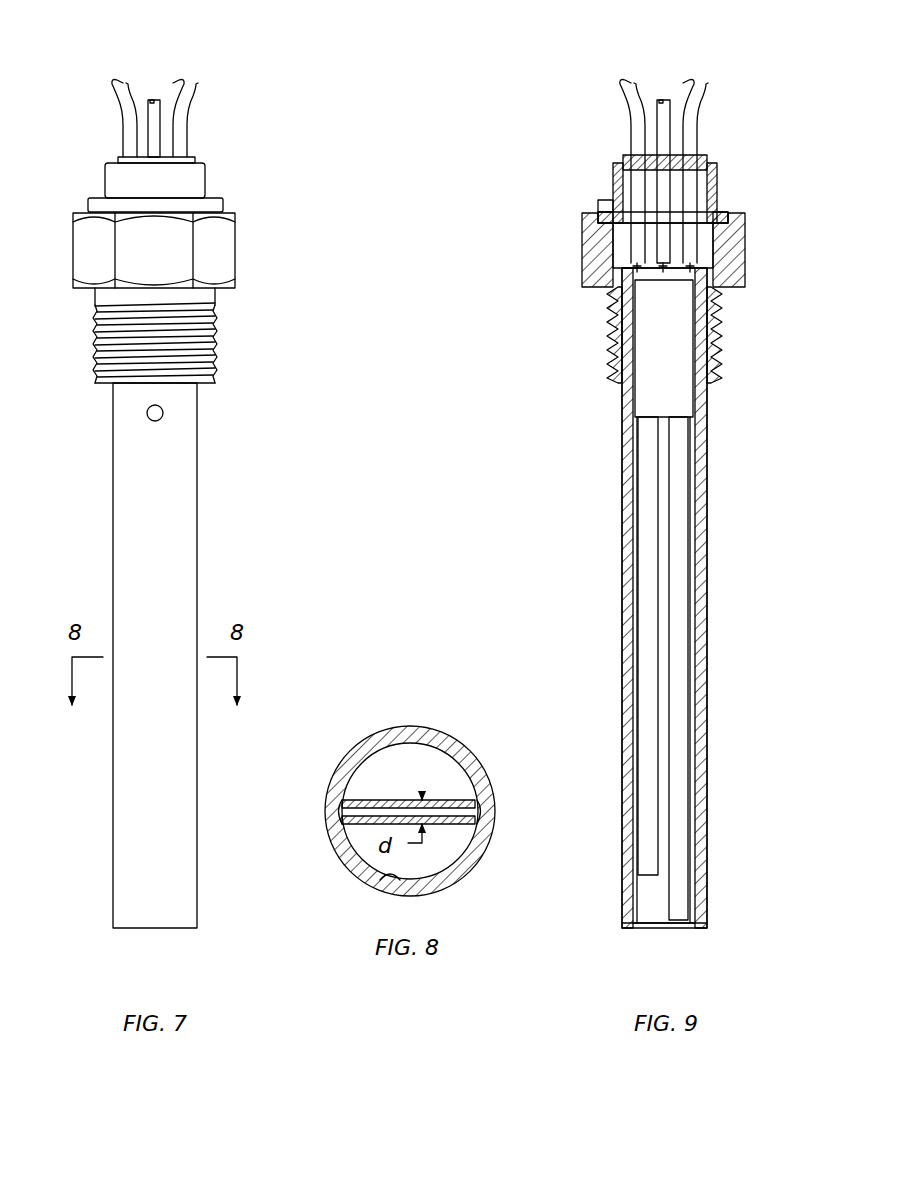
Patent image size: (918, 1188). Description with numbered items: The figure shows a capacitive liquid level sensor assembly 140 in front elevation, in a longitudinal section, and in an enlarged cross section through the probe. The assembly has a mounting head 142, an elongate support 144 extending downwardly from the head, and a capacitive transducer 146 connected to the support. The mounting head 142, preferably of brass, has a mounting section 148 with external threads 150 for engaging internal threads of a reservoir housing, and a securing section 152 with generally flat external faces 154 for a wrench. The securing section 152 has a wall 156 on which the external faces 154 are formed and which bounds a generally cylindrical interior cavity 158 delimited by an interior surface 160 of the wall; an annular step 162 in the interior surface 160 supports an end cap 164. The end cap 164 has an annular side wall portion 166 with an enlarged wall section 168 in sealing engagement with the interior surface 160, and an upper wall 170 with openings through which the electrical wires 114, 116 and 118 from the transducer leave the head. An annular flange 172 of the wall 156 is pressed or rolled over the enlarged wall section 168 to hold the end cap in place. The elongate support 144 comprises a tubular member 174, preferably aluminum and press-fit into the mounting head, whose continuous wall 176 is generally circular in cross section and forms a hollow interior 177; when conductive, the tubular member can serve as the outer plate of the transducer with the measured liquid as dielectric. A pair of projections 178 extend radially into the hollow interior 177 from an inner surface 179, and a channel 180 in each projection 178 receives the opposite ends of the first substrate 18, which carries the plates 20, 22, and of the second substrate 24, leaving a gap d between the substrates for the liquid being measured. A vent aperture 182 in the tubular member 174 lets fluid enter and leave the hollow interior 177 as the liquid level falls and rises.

In FIG. 8, the first substrate 18 is at (470, 775).
In FIG. 9, the first substrate 18 is at (640, 905).
In FIG. 9, the plate 20 is at (650, 762).
In FIG. 9, the plate 22 is at (680, 660).
In FIG. 8, the second substrate 24 is at (418, 890).
In FIG. 7, the electrical wire 114 is at (120, 82).
In FIG. 9, the electrical wire 114 is at (630, 82).
In FIG. 7, the electrical wire 116 is at (154, 100).
In FIG. 9, the electrical wire 116 is at (663, 100).
In FIG. 7, the electrical wire 118 is at (185, 82).
In FIG. 9, the electrical wire 118 is at (695, 82).
In FIG. 7, the capacitive liquid level sensor assembly 140 is at (250, 148).
In FIG. 9, the capacitive liquid level sensor assembly 140 is at (565, 100).
In FIG. 7, the mounting head 142 is at (235, 230).
In FIG. 9, the mounting head 142 is at (748, 260).
In FIG. 7, the elongate support 144 is at (197, 465).
In FIG. 8, the elongate support 144 is at (462, 740).
In FIG. 9, the elongate support 144 is at (707, 475).
In FIG. 8, the capacitive transducer 146 is at (415, 795).
In FIG. 9, the capacitive transducer 146 is at (653, 930).
In FIG. 7, the mounting section 148 is at (215, 318).
In FIG. 9, the mounting section 148 is at (722, 318).
In FIG. 7, the external threads 150 is at (215, 351).
In FIG. 9, the external threads 150 is at (722, 351).
In FIG. 7, the securing section 152 is at (73, 235).
In FIG. 7, the external faces 154 is at (80, 262).
In FIG. 9, the external faces 154 is at (745, 285).
In FIG. 9, the wall 156 is at (620, 245).
In FIG. 9, the interior cavity 158 is at (610, 280).
In FIG. 9, the interior surface 160 is at (620, 260).
In FIG. 9, the annular step 162 is at (742, 236).
In FIG. 7, the end cap 164 is at (110, 183).
In FIG. 9, the end cap 164 is at (613, 185).
In FIG. 9, the annular side wall portion 166 is at (718, 175).
In FIG. 9, the enlarged wall section 168 is at (598, 208).
In FIG. 7, the upper wall 170 is at (118, 160).
In FIG. 9, the upper wall 170 is at (623, 160).
In FIG. 7, the annular flange 172 is at (215, 205).
In FIG. 9, the annular flange 172 is at (728, 215).
In FIG. 7, the tubular member 174 is at (180, 580).
In FIG. 8, the tubular member 174 is at (385, 760).
In FIG. 9, the tubular member 174 is at (705, 575).
In FIG. 8, the continuous wall 176 is at (450, 875).
In FIG. 8, the hollow interior 177 is at (378, 783).
In FIG. 9, the hollow interior 177 is at (700, 730).
In FIG. 8, the projections 178 is at (360, 860).
In FIG. 9, the projections 178 is at (628, 590).
In FIG. 8, the inner surface 179 is at (385, 880).
In FIG. 8, the channel 180 is at (342, 812).
In FIG. 7, the vent aperture 182 is at (147, 413).